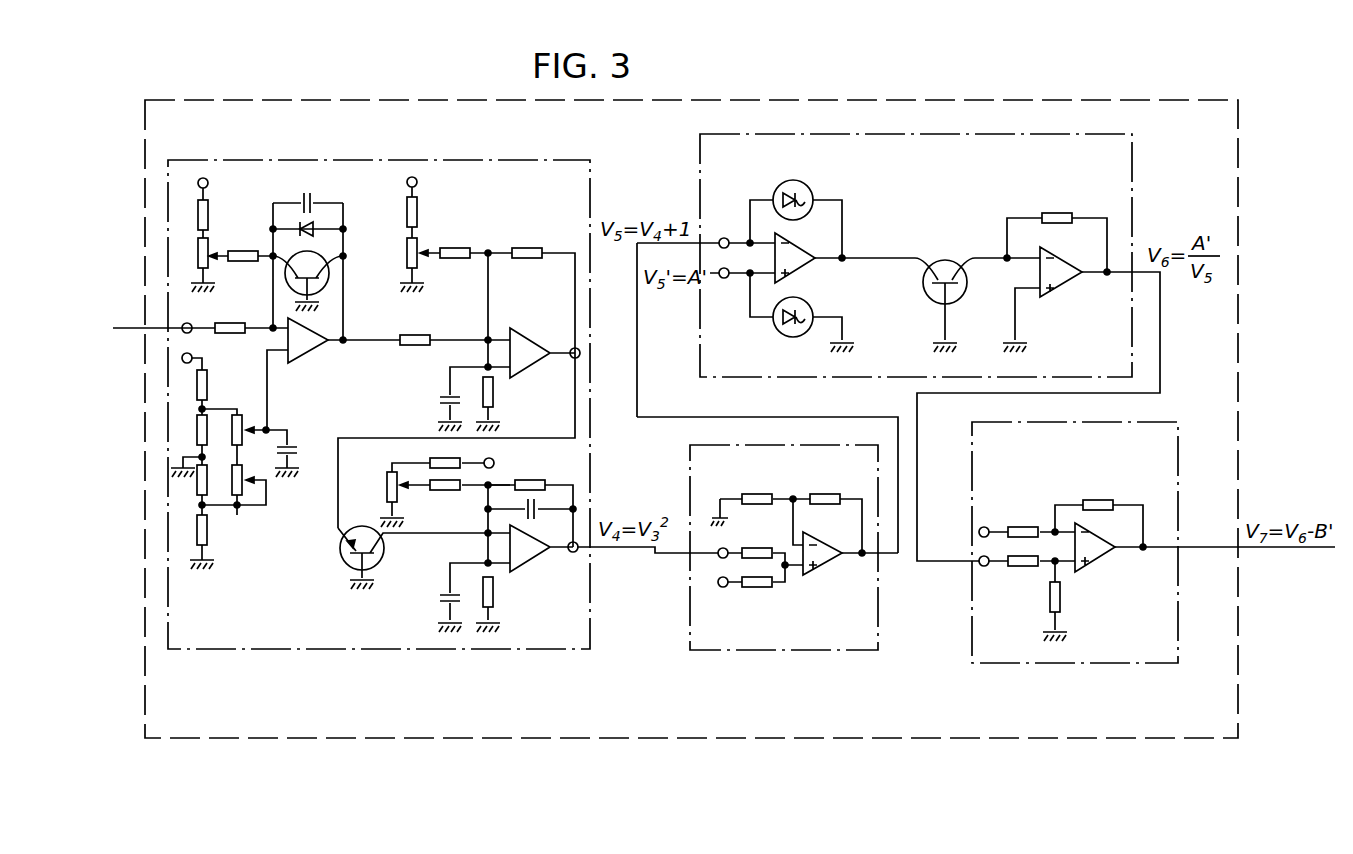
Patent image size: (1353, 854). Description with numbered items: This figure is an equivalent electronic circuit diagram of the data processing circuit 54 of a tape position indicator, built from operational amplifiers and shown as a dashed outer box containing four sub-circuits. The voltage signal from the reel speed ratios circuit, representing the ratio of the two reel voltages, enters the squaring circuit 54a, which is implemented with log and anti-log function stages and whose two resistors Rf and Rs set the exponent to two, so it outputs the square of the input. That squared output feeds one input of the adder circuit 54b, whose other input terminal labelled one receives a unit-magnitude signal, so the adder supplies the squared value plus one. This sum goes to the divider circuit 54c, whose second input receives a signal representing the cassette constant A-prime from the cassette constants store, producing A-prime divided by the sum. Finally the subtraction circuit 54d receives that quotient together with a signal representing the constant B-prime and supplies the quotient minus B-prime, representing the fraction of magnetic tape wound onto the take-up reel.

The data processing circuit 54 is at (827, 97).
The squaring circuit 54a is at (495, 160).
The adder circuit 54b is at (773, 652).
The divider circuit 54c is at (1133, 165).
The subtraction circuit 54d is at (1143, 665).